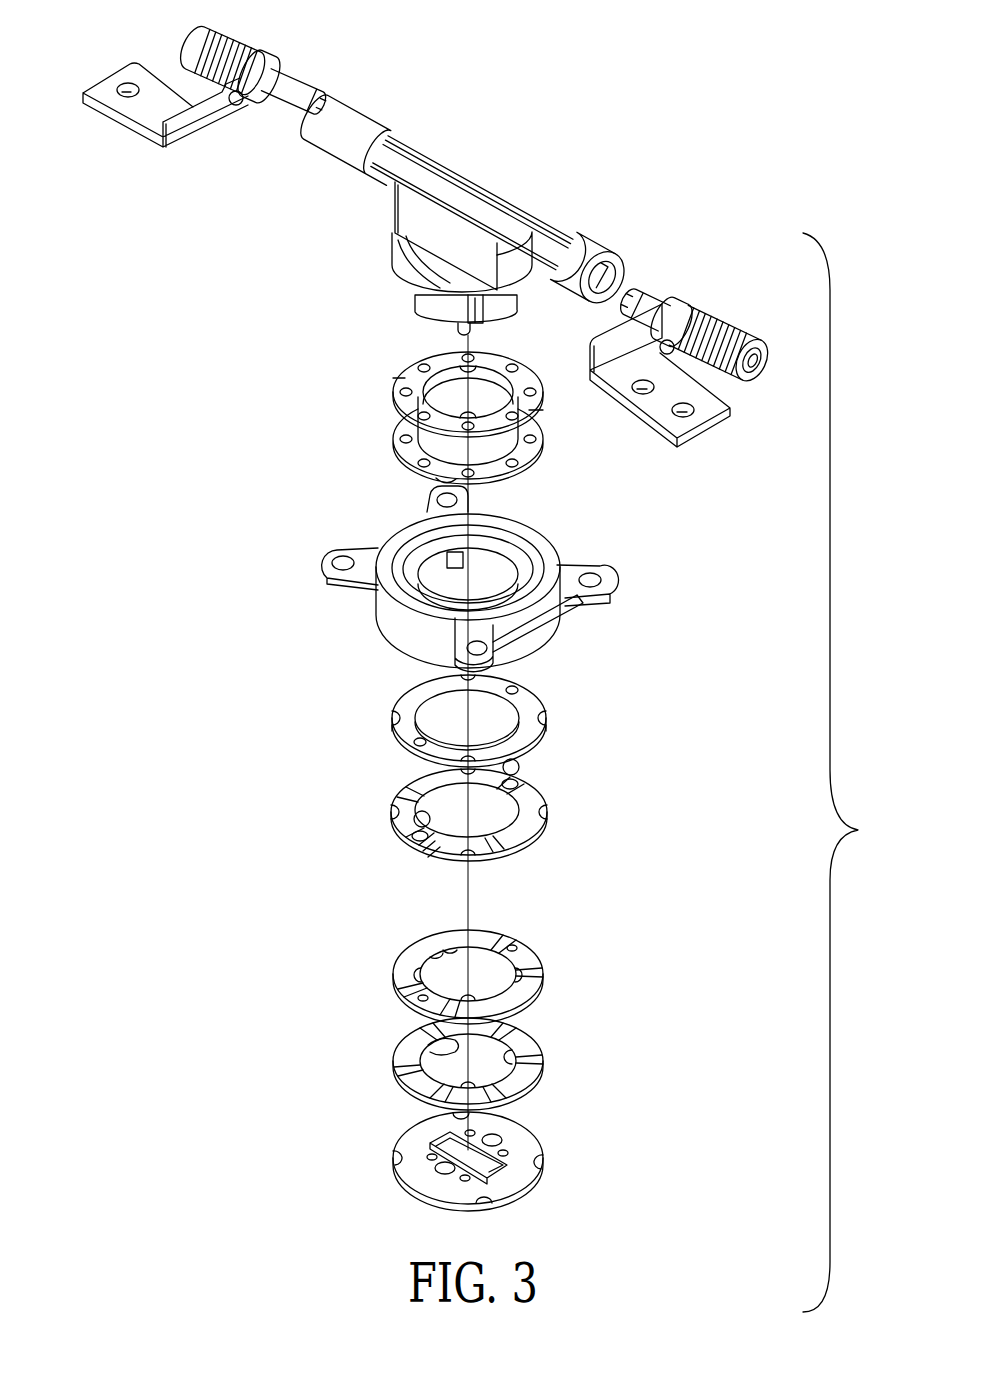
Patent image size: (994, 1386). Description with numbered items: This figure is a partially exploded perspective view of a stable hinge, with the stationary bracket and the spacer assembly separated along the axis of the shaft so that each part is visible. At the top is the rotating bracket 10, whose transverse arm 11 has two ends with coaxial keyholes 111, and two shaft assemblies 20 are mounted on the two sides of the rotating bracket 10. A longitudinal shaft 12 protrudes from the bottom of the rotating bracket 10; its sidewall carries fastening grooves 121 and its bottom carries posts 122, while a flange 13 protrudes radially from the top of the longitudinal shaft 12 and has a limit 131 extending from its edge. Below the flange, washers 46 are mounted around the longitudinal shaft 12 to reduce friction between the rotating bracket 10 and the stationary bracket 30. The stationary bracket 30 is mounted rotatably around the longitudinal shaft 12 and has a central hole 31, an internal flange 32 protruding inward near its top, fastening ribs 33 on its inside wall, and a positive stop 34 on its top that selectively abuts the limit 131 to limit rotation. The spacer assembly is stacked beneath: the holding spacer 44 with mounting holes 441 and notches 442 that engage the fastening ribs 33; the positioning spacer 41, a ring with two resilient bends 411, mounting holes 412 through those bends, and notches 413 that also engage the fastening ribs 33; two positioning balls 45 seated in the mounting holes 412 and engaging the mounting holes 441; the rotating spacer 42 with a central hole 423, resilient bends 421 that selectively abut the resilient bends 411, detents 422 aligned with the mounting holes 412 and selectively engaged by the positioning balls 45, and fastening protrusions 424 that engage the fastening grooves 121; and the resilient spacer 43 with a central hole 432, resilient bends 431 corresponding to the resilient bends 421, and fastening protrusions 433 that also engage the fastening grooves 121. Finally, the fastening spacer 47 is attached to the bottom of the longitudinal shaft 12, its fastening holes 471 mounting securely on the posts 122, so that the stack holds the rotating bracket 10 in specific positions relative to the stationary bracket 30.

The rotating bracket 10 is at (490, 229).
The transverse arm 11 is at (497, 200).
The keyholes 111 is at (617, 267).
The longitudinal shaft 12 is at (467, 330).
The fastening grooves 121 is at (482, 307).
The posts 122 is at (447, 330).
The flange 13 is at (432, 239).
The limit 131 is at (410, 272).
The shaft assemblies 20 is at (160, 48).
The stationary bracket 30 is at (483, 579).
The central hole 31 is at (443, 577).
The internal flange 32 is at (507, 543).
The fastening ribs 33 is at (443, 557).
The positive stop 34 is at (527, 585).
The positioning spacer 41 is at (466, 826).
The resilient bends 411 is at (427, 857).
The mounting holes 412 is at (417, 837).
The notches 413 is at (485, 857).
The rotating spacer 42 is at (463, 960).
The resilient bends 421 is at (410, 992).
The detents 422 is at (417, 980).
The central hole 423 is at (488, 963).
The fastening protrusions 424 is at (437, 953).
The resilient spacer 43 is at (462, 1063).
The resilient bends 431 is at (417, 1078).
The central hole 432 is at (530, 1077).
The fastening protrusions 433 is at (433, 1037).
The holding spacer 44 is at (479, 721).
The mounting holes 441 is at (397, 733).
The notches 442 is at (540, 727).
The positioning balls 45 is at (417, 817).
The washers 46 is at (525, 378).
The fastening spacer 47 is at (473, 1161).
The fastening holes 471 is at (433, 1168).